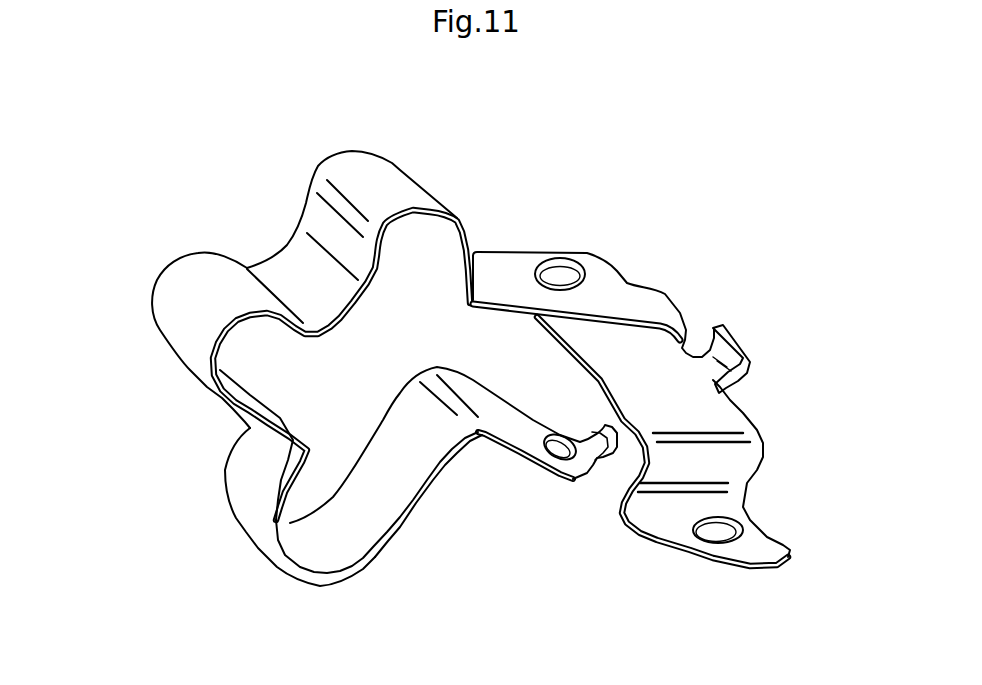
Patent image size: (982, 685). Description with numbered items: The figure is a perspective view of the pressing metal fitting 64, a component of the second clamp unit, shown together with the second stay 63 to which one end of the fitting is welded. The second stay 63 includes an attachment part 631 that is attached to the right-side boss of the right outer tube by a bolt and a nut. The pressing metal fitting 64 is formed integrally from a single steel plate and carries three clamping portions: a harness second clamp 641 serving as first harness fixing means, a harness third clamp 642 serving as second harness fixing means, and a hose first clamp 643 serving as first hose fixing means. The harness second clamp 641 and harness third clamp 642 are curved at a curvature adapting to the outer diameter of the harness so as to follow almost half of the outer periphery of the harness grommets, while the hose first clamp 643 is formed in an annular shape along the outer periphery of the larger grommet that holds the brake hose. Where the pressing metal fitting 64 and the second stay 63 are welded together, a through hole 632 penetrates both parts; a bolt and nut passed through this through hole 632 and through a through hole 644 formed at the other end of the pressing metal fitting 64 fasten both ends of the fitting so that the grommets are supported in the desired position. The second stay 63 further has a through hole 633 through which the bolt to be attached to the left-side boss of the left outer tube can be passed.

The second stay 63 is at (653, 400).
The attachment part 631 is at (617, 352).
The through hole 632 is at (567, 273).
The through hole 633 is at (720, 525).
The pressing metal fitting 64 is at (378, 371).
The harness second clamp 641 is at (190, 278).
The harness third clamp 642 is at (377, 167).
The hose first clamp 643 is at (343, 578).
The through hole 644 is at (560, 447).